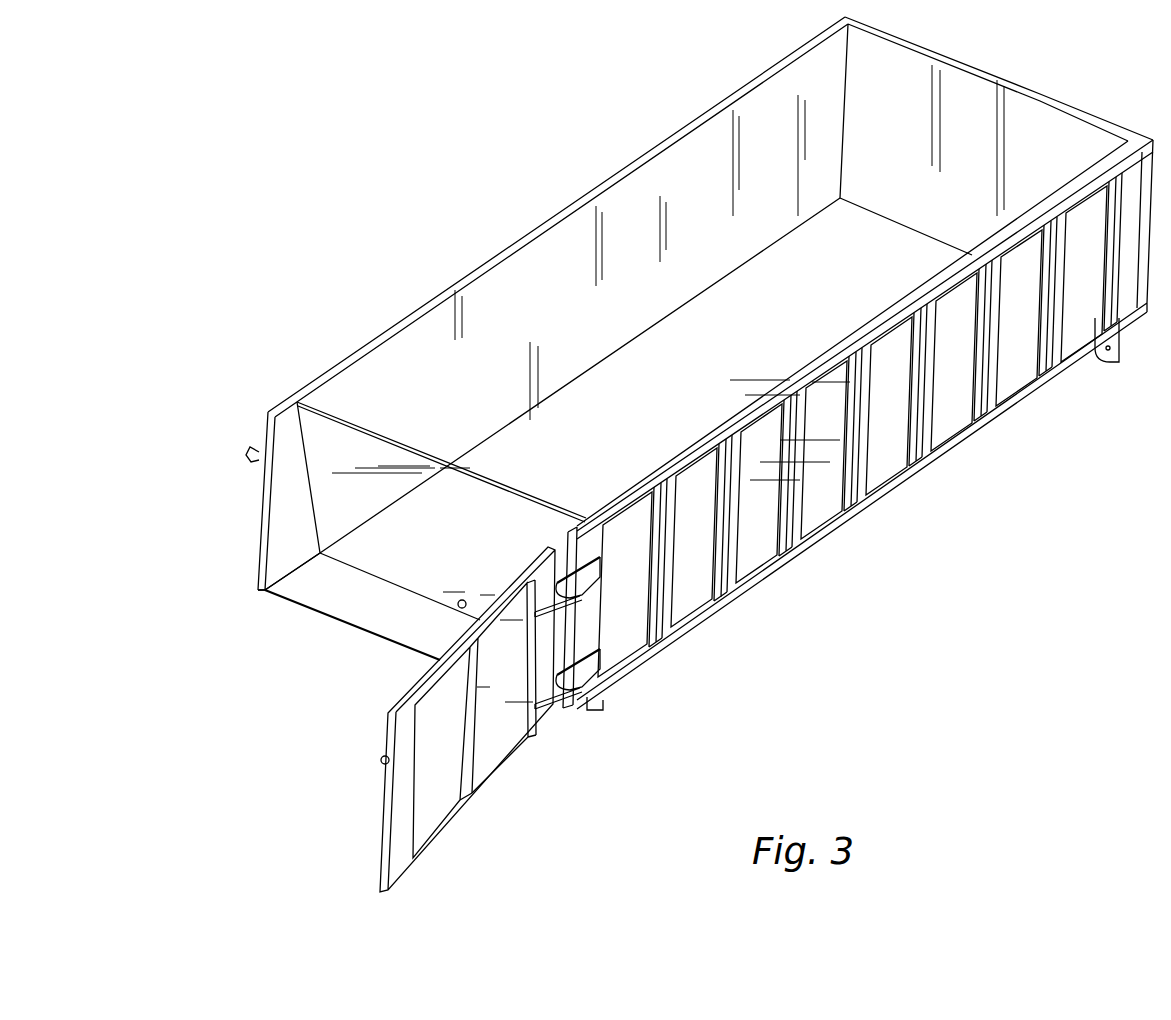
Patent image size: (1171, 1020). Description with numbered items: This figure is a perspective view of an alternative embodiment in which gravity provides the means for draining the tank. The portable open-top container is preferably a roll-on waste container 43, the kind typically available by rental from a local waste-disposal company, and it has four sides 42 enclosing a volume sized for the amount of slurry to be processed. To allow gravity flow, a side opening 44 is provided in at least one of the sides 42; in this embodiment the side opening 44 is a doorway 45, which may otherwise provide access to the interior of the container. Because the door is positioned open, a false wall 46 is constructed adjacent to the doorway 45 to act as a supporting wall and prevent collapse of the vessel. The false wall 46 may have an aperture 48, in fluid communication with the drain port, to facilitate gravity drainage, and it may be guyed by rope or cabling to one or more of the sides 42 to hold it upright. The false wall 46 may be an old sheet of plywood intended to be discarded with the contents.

The sides 42 is at (505, 305).
The roll-on waste container 43 is at (832, 488).
The side opening 44 is at (300, 606).
The doorway 45 is at (362, 608).
The false wall 46 is at (453, 505).
The aperture 48 is at (458, 605).